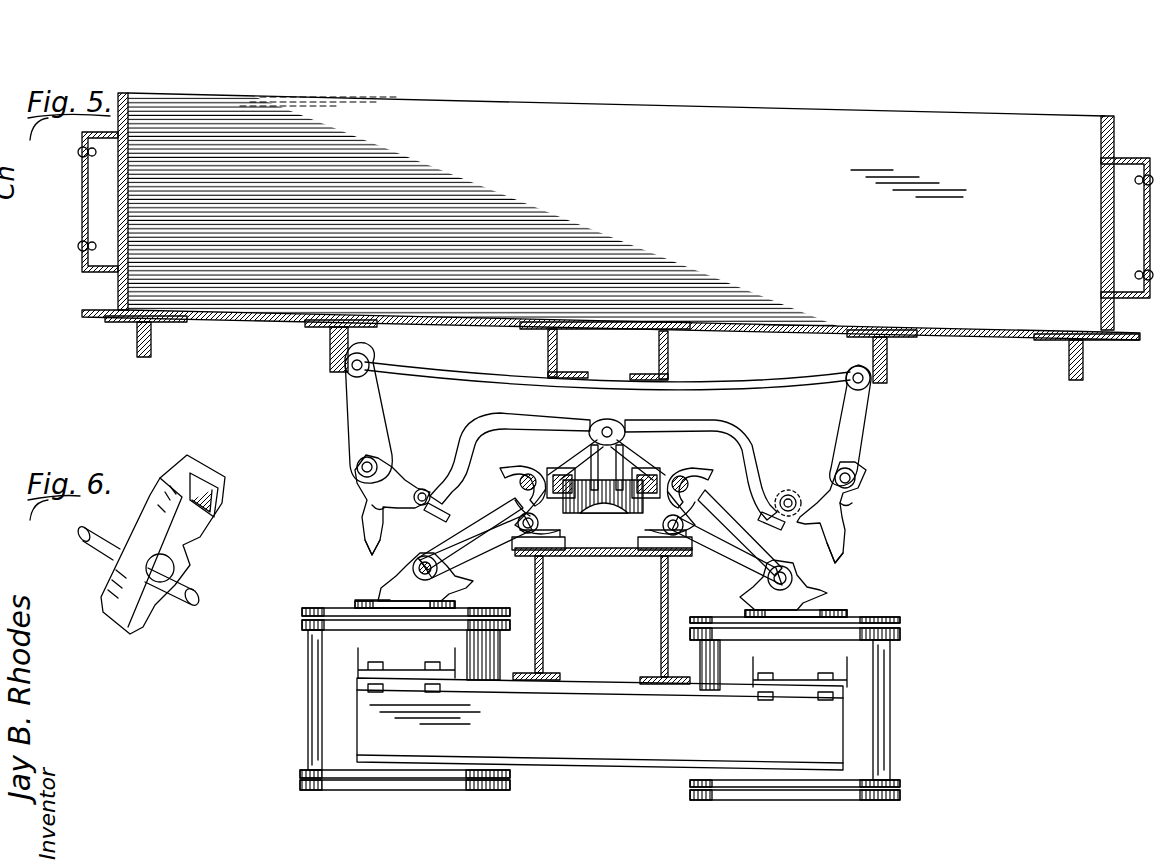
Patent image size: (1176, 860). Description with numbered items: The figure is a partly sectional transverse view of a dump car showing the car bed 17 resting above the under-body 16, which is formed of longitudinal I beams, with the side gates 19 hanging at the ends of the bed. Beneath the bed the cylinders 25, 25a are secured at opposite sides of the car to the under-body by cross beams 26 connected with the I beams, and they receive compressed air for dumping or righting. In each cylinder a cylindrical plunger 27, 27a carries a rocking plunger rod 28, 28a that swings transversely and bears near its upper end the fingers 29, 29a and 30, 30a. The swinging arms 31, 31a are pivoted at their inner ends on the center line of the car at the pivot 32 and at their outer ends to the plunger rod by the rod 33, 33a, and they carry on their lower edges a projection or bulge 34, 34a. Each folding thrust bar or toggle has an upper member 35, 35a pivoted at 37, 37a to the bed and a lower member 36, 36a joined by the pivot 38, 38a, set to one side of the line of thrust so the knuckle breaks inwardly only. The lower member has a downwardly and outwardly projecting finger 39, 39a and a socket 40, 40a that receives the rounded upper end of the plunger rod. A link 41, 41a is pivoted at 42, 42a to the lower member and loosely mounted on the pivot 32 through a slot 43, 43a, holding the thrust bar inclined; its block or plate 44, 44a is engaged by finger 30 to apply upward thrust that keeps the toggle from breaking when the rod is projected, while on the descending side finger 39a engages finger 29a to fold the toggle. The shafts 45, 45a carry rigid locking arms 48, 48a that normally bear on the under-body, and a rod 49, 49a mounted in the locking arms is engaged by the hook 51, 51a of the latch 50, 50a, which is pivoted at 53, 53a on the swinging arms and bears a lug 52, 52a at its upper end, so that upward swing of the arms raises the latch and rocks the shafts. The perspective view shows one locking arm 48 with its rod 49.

In FIG. 5, the under-body 16 is at (544, 668).
In FIG. 5, the car bed 17 is at (975, 335).
In FIG. 5, the side gates 19 is at (118, 196).
In FIG. 6, the side gates 19 is at (186, 604).
In FIG. 5, the cylinder 25 is at (890, 705).
In FIG. 5, the cylinder 25a is at (312, 712).
In FIG. 5, the cross beams 26 is at (585, 752).
In FIG. 5, the cylindrical plunger 27 is at (847, 610).
In FIG. 5, the cylindrical plunger 27a is at (360, 600).
In FIG. 5, the plunger rod 28 is at (825, 605).
In FIG. 5, the plunger rod 28a is at (455, 604).
In FIG. 5, the finger 29 is at (815, 590).
In FIG. 5, the finger 29a is at (378, 588).
In FIG. 5, the finger 30 is at (740, 597).
In FIG. 5, the finger 30a is at (466, 585).
In FIG. 5, the swinging arms 31 is at (760, 562).
In FIG. 5, the swinging arms 31a is at (478, 560).
In FIG. 5, the pivot 32 is at (607, 426).
In FIG. 5, the rod 33 is at (784, 572).
In FIG. 5, the rod 33a is at (416, 564).
In FIG. 5, the projection or bulge 34 is at (740, 548).
In FIG. 5, the projection or bulge 34a is at (496, 532).
In FIG. 5, the upper toggle member 35 is at (870, 428).
In FIG. 5, the upper toggle member 35a is at (360, 412).
In FIG. 5, the lower toggle member 36 is at (830, 510).
In FIG. 5, the lower toggle member 36a is at (370, 496).
In FIG. 5, the pivot 37 is at (868, 385).
In FIG. 5, the pivot 37a is at (352, 372).
In FIG. 5, the pivot 38 is at (858, 478).
In FIG. 5, the pivot 38a is at (357, 465).
In FIG. 5, the finger 39 is at (838, 545).
In FIG. 5, the finger 39a is at (367, 535).
In FIG. 5, the socket 40 is at (840, 522).
In FIG. 5, the socket 40a is at (372, 507).
In FIG. 5, the link 41 is at (735, 416).
In FIG. 5, the link 41a is at (492, 418).
In FIG. 5, the pivot 42 is at (793, 488).
In FIG. 5, the pivot 42a is at (423, 488).
In FIG. 5, the slot 43 is at (625, 428).
In FIG. 5, the slot 43a is at (590, 430).
In FIG. 5, the block or plate 44 is at (770, 516).
In FIG. 5, the block or plate 44a is at (437, 517).
In FIG. 5, the shafts 45 is at (650, 478).
In FIG. 5, the shafts 45a is at (560, 478).
In FIG. 5, the locking arm 48 is at (630, 508).
In FIG. 6, the locking arm 48 is at (190, 546).
In FIG. 5, the locking arm 48a is at (585, 556).
In FIG. 5, the rod 49 is at (683, 523).
In FIG. 5, the rod 49a is at (518, 523).
In FIG. 5, the latch 50 is at (690, 500).
In FIG. 5, the latch 50a is at (525, 500).
In FIG. 5, the hook 51 is at (655, 556).
In FIG. 5, the hook 51a is at (545, 556).
In FIG. 5, the lug 52 is at (690, 484).
In FIG. 5, the lug 52a is at (520, 482).
In FIG. 5, the pivot 53 is at (700, 478).
In FIG. 5, the pivot 53a is at (515, 470).